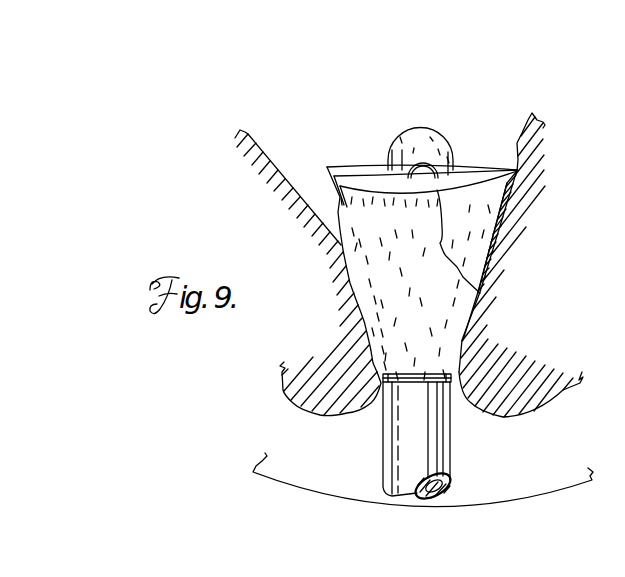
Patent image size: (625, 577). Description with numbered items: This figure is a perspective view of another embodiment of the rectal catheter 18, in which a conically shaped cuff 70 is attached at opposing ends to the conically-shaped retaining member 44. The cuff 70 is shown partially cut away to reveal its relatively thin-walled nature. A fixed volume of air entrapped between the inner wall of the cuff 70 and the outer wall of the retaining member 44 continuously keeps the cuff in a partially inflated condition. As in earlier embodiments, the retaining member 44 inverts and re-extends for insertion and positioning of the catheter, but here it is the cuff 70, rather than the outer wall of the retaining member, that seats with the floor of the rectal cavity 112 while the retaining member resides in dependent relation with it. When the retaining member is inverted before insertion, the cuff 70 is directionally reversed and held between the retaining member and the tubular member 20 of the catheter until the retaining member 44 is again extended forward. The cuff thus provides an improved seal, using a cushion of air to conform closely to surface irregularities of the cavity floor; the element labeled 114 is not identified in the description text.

The rectal catheter 18 is at (391, 118).
The conically shaped cuff 70 is at (352, 232).
The rectal cavity 112 is at (272, 158).
The conically-shaped retaining member 44 is at (468, 187).
The cortical bone layer 114 is at (382, 383).
The tubular member 20 is at (422, 439).